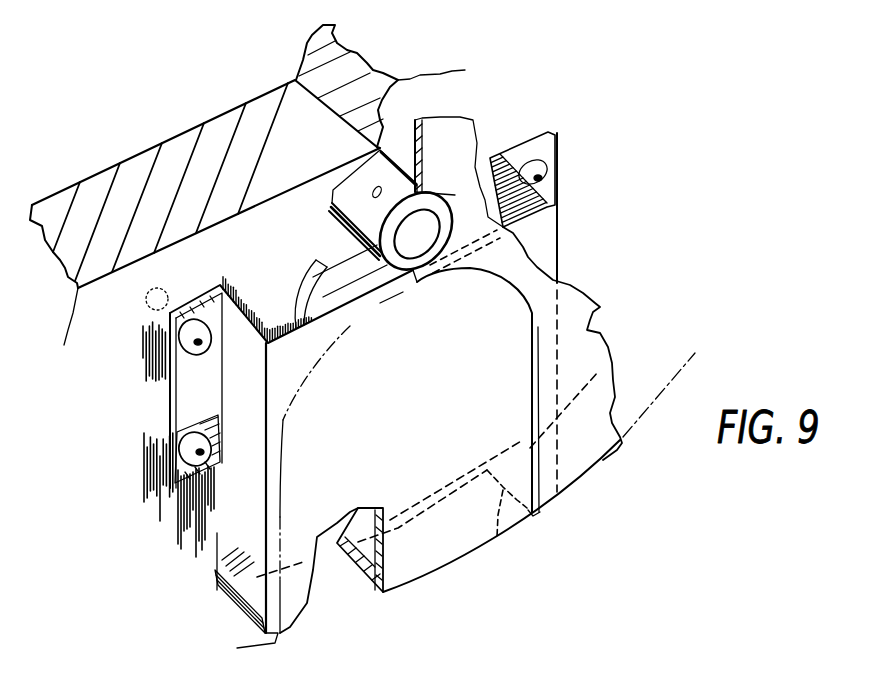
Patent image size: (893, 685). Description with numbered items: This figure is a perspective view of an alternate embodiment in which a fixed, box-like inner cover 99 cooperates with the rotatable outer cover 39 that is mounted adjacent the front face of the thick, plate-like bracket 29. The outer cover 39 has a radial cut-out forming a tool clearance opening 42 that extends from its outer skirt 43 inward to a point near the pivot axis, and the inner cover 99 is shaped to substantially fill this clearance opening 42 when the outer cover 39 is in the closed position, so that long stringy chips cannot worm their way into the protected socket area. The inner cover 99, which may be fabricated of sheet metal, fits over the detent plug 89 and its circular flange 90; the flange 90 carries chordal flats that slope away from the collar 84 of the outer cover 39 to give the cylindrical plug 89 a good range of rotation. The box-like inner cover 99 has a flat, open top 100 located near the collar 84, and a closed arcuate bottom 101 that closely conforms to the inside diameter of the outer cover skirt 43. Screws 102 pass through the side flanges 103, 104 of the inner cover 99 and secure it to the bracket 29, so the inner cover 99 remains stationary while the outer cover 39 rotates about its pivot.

The bracket 29 is at (199, 281).
The cover 39 is at (583, 294).
The tool clearance opening 42 is at (530, 345).
The outer skirt 43 is at (497, 537).
The collar 84 is at (333, 198).
The cylindrical plug 89 is at (342, 266).
The circular flange 90 is at (308, 278).
The inner cover 99 is at (558, 237).
The open top 100 is at (291, 459).
The arcuate bottom 101 is at (358, 577).
The screws 102 is at (182, 357).
The side flange 103 is at (170, 420).
The side flange 104 is at (552, 182).